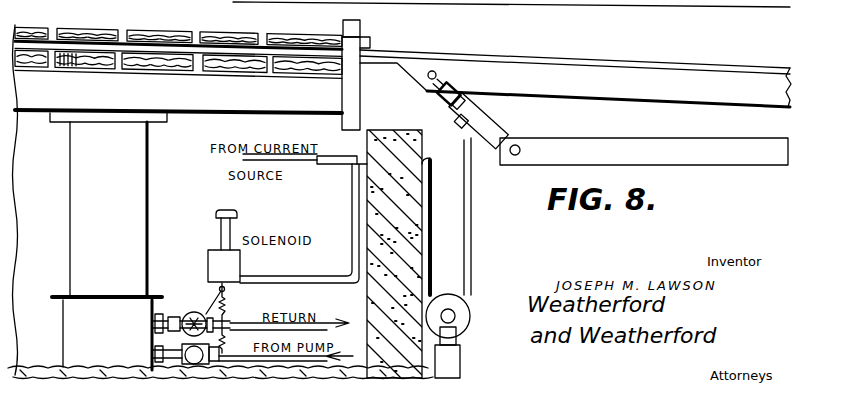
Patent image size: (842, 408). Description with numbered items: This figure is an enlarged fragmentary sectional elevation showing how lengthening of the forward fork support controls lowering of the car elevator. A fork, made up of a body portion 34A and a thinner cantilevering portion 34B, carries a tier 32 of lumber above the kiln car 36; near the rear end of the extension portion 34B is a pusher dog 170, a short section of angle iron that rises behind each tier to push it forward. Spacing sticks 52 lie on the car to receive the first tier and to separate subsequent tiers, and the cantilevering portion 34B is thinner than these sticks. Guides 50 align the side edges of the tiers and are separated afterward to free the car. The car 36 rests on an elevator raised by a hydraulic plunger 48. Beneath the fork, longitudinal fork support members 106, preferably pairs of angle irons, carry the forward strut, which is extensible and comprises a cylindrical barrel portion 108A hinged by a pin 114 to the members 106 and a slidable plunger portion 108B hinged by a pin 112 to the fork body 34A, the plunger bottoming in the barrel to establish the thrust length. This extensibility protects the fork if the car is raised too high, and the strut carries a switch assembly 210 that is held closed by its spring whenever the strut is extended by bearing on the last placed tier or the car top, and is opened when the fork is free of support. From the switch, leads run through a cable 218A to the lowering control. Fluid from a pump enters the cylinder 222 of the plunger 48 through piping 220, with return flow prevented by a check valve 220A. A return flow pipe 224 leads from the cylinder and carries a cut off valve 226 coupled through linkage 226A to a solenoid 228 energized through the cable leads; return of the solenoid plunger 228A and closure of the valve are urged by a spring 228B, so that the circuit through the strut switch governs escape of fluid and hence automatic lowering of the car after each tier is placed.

The tier 32 is at (96, 22).
The body portion 34A is at (575, 78).
The cantilevering portion 34B is at (167, 50).
The kiln car 36 is at (226, 98).
The plunger 48 is at (84, 222).
The guide 50 is at (343, 97).
The spacing stick 52 is at (178, 49).
The fork support member 106 is at (590, 155).
The cylindrical barrel portion 108A is at (490, 131).
The slidable plunger portion 108B is at (466, 93).
The hinge pin 112 is at (436, 75).
The hinge pin 114 is at (521, 148).
The pusher dog 170 is at (375, 25).
The switch assembly 210 is at (446, 127).
The cable 218A is at (472, 235).
The piping 220 is at (220, 357).
The check valve 220A is at (153, 346).
The cylinder 222 is at (80, 336).
The return flow pipe 224 is at (153, 313).
The cut off valve 226 is at (197, 310).
The linkage 226A is at (219, 300).
The solenoid 228 is at (226, 258).
The solenoid plunger 228A is at (221, 236).
The spring 228B is at (232, 310).